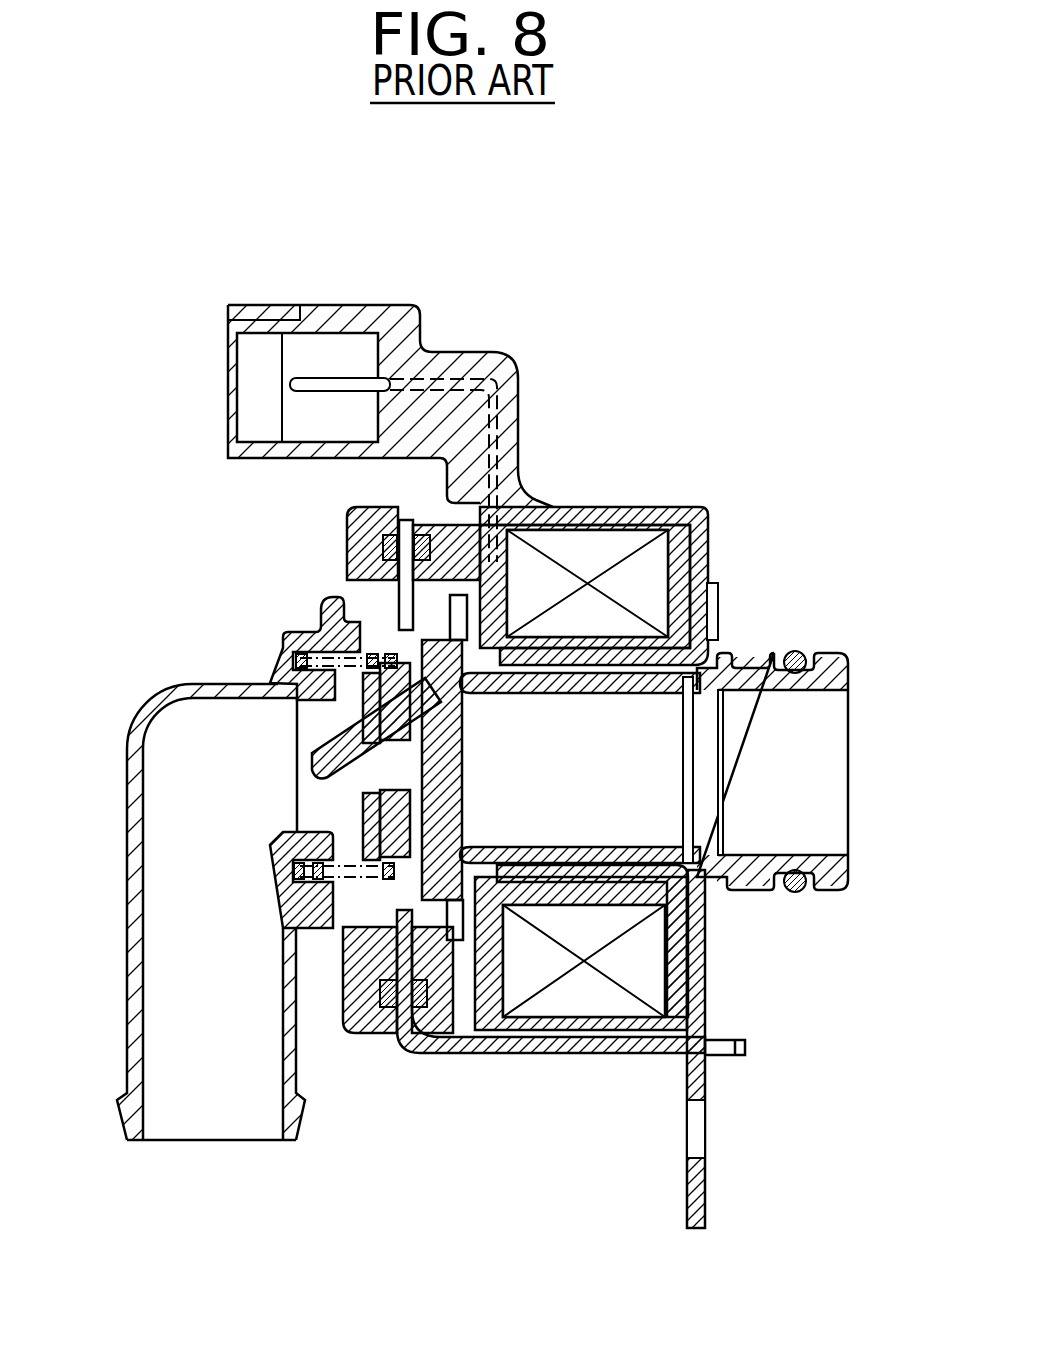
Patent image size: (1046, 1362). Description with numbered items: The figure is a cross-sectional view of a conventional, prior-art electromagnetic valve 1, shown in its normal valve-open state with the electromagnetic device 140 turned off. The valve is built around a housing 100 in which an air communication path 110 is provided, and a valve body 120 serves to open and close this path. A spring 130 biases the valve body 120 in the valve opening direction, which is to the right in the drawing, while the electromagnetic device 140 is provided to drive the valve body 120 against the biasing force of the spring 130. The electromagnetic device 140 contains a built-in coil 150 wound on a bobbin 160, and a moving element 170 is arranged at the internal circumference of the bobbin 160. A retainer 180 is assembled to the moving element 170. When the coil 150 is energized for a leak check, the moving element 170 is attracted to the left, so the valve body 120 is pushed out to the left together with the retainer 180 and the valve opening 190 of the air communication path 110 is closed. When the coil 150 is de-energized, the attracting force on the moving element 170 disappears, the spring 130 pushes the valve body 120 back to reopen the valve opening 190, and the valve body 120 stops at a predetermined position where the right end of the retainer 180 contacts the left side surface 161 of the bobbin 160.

The electromagnetic valve 1 is at (703, 339).
The housing 100 is at (140, 713).
The air communication path 110 is at (238, 898).
The valve body 120 is at (322, 768).
The spring 130 is at (368, 873).
The electromagnetic device 140 is at (734, 563).
The coil 150 is at (592, 548).
The bobbin 160 is at (682, 593).
The left side surface 161 is at (470, 953).
The moving element 170 is at (636, 682).
The retainer 180 is at (430, 665).
The valve opening 190 is at (327, 743).